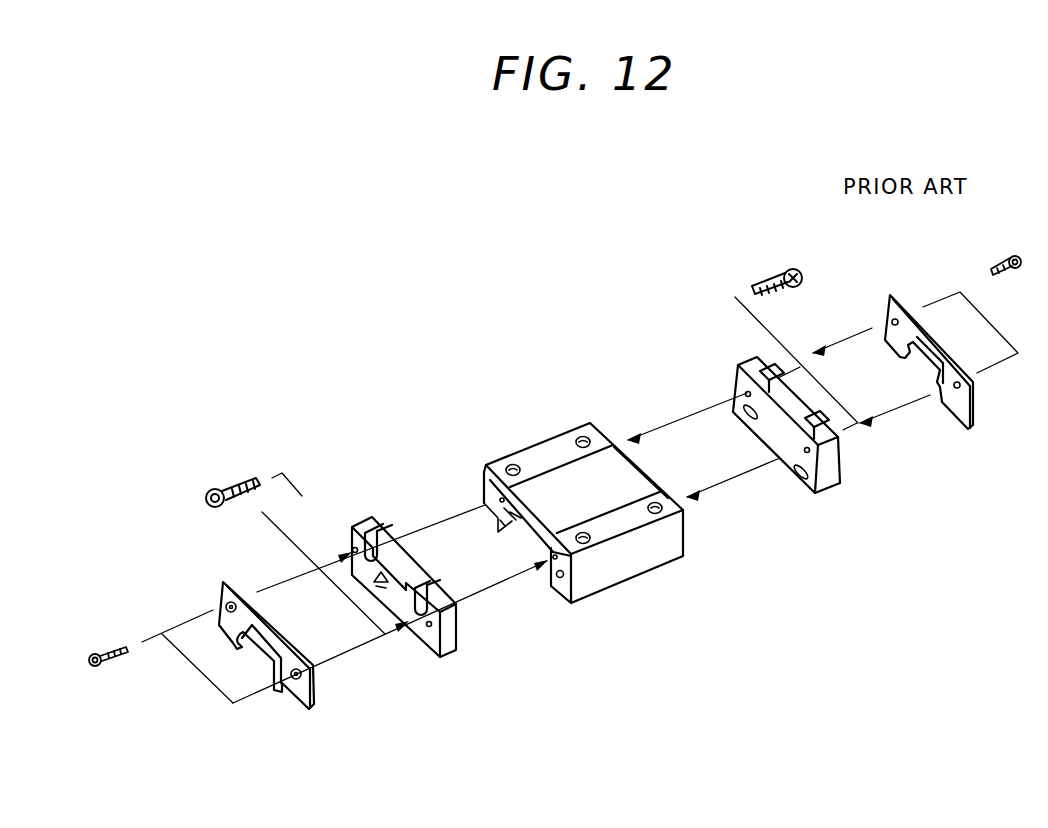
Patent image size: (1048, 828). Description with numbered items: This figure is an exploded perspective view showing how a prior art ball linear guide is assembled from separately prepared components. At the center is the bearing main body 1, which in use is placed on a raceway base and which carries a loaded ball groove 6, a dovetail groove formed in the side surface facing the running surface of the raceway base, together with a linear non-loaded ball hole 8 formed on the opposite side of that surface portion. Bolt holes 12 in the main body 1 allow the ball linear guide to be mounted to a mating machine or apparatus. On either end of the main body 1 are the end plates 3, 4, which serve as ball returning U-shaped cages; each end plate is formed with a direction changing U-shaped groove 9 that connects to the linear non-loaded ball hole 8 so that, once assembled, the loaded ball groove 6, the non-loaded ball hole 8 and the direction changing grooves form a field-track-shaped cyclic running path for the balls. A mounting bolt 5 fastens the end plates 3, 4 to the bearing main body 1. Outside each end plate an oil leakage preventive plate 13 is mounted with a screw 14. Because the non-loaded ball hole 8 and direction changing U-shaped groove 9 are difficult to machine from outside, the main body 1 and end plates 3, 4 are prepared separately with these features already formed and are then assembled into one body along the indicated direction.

The bearing main body 1 is at (550, 515).
The end plate 3 is at (752, 403).
The end plate 4 is at (360, 515).
The mounting bolt 5 is at (233, 482).
The loaded ball groove 6 is at (478, 520).
The non-loaded ball hole 8 is at (562, 578).
The direction changing U-shaped groove 9 is at (748, 397).
The bolt hole 12 is at (658, 516).
The oil leakage preventive plate 13 is at (318, 698).
The screw 14 is at (107, 640).